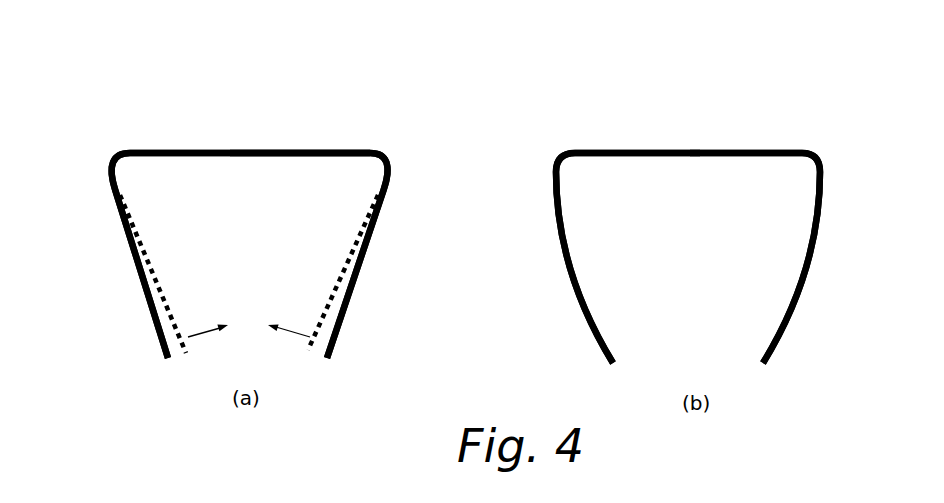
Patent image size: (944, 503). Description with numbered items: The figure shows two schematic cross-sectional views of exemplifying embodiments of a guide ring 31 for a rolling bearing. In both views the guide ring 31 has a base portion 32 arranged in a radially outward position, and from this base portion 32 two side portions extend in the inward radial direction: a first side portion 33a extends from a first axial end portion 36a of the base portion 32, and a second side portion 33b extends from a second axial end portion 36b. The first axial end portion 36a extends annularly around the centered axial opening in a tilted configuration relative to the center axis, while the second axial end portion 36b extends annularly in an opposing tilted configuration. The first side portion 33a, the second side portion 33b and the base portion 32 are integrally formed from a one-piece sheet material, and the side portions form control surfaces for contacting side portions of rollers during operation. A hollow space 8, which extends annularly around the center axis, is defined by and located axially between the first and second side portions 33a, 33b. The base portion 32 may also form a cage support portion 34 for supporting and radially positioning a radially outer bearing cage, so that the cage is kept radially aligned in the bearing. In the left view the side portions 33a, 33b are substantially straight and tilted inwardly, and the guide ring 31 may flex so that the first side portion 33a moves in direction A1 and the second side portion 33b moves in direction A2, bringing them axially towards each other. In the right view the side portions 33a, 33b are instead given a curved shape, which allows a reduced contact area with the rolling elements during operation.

In FIG. 4a, the guide ring 31 is at (124, 103).
In FIG. 4b, the guide ring 31 is at (561, 103).
In FIG. 4a, the base portion 32 is at (188, 152).
In FIG. 4b, the base portion 32 is at (737, 152).
In FIG. 4a, the cage support portion 34 is at (303, 152).
In FIG. 4b, the cage support portion 34 is at (635, 152).
In FIG. 4a, the first axial end portion 36a is at (110, 157).
In FIG. 4b, the first axial end portion 36a is at (557, 155).
In FIG. 4a, the second axial end portion 36b is at (387, 157).
In FIG. 4b, the second axial end portion 36b is at (816, 155).
In FIG. 4a, the first side portion 33a is at (143, 292).
In FIG. 4b, the first side portion 33a is at (582, 308).
In FIG. 4a, the second side portion 33b is at (373, 240).
In FIG. 4b, the second side portion 33b is at (813, 255).
In FIG. 4a, the hollow space 8 is at (251, 255).
In FIG. 4b, the hollow space 8 is at (687, 278).
In FIG. 4a, the flexing direction of first side portion A1 is at (190, 335).
In FIG. 4a, the flexing direction of second side portion A2 is at (298, 336).